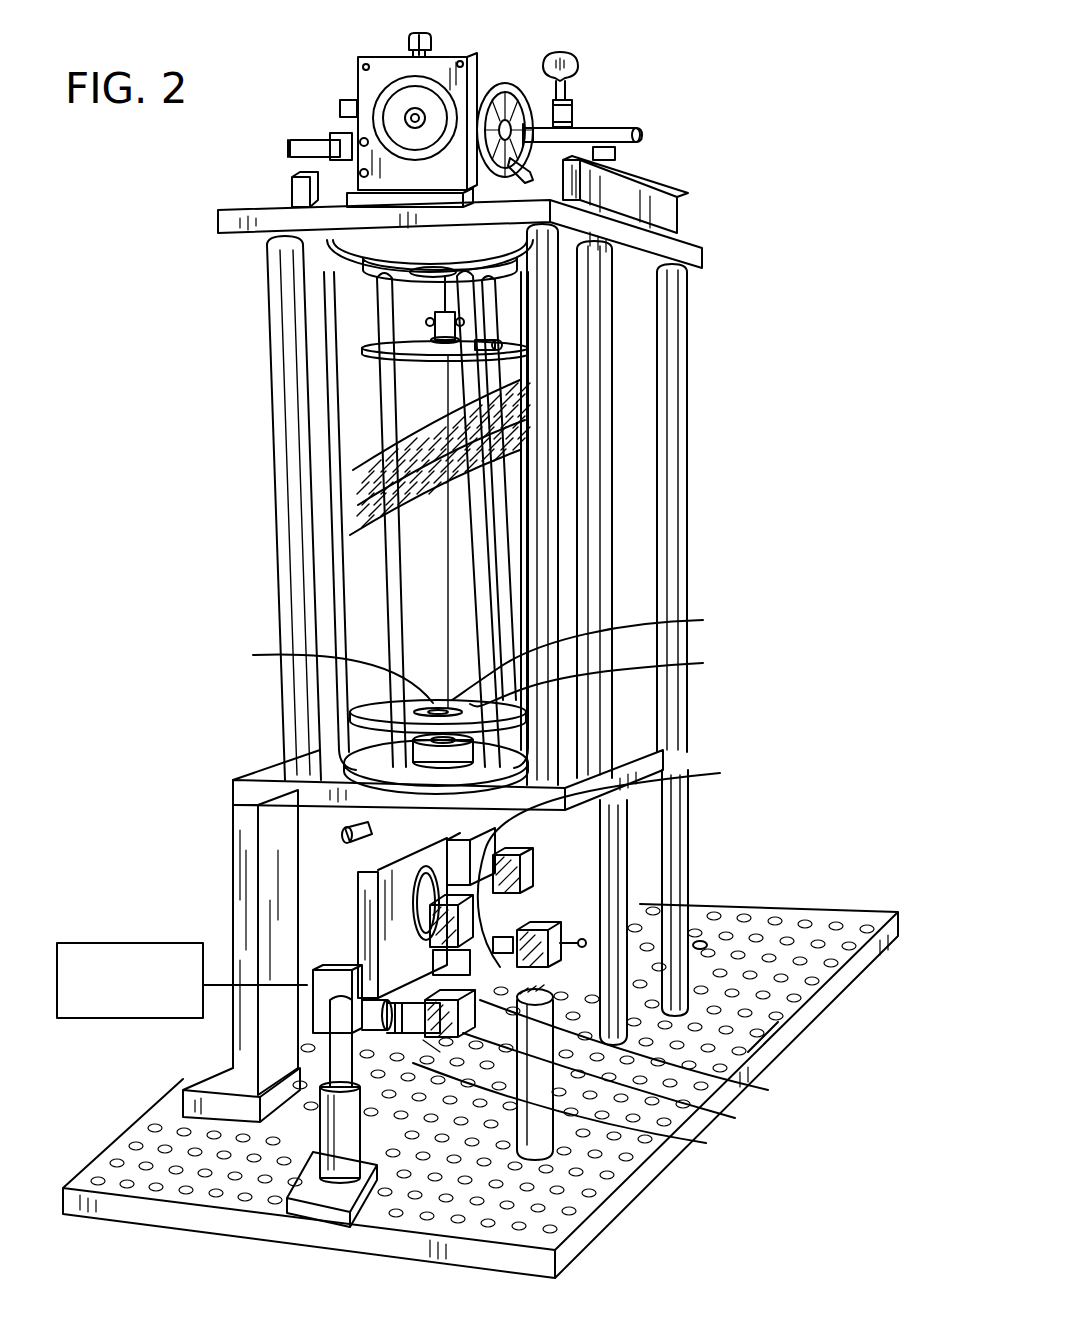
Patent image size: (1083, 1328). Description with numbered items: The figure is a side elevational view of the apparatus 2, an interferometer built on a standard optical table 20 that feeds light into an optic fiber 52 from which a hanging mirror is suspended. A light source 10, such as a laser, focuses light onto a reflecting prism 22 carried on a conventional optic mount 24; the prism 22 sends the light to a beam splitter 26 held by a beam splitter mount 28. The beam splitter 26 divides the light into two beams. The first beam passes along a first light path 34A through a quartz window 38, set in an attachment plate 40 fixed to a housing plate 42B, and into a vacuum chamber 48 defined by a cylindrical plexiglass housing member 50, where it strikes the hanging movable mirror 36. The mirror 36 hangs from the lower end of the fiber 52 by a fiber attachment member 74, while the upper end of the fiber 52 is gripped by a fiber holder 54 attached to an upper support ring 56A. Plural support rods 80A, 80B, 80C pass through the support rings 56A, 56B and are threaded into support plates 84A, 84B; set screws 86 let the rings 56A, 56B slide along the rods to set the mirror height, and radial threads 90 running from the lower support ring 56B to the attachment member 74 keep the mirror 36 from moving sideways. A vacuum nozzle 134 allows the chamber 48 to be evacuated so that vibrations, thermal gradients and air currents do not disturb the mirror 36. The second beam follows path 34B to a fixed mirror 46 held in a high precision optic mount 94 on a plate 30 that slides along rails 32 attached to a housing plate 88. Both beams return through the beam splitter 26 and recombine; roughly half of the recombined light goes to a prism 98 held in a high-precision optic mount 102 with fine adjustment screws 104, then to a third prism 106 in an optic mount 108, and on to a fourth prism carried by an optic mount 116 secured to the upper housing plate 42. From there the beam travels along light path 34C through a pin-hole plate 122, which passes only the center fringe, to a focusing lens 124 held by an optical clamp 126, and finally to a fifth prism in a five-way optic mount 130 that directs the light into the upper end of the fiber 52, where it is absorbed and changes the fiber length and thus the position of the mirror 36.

The apparatus 2 is at (738, 170).
The light source 10 is at (92, 1018).
The optical table 20 is at (377, 1237).
The reflecting prism 22 is at (313, 1007).
The optic mount 24 is at (313, 1125).
The beam splitter 26 is at (440, 918).
The beam splitter mount 28 is at (540, 913).
The plate 30 is at (612, 745).
The rails 32 is at (440, 973).
The first light path 34A is at (447, 855).
The path 34B is at (518, 880).
The light path 34C is at (762, 1033).
The hanging movable mirror 36 is at (326, 675).
The quartz window 38 is at (433, 740).
The attachment plate 40 is at (273, 767).
The housing plate 42 is at (693, 255).
The housing plate 42B is at (253, 792).
The fixed mirror 46 is at (493, 840).
The vacuum chamber 48 is at (355, 594).
The cylindrical plexiglass housing member 50 is at (367, 543).
The optic fiber 52 is at (430, 503).
The fiber holder 54 is at (430, 307).
The support ring 56A is at (387, 375).
The support ring 56B is at (352, 718).
The fiber attachment member 74 is at (594, 654).
The support rod 80A is at (480, 397).
The support rod 80B is at (517, 427).
The support rod 80C is at (490, 452).
The support plate 84A is at (490, 270).
The support plate 84B is at (515, 747).
The set screws 86 is at (498, 346).
The housing plate 88 is at (245, 1072).
The radial threads 90 is at (603, 680).
The high precision optic mount 94 is at (615, 864).
The prism 98 is at (641, 1052).
The high-precision optic mount 102 is at (623, 1082).
The fine adjustment screws 104 is at (583, 1110).
The third prism 106 is at (706, 942).
The high precision optic mount 108 is at (588, 942).
The high-precision optic mount 116 is at (617, 152).
The pin-hole plate 122 is at (600, 116).
The focusing lens 124 is at (579, 92).
The optical clamp 126 is at (488, 83).
The high-precision optic mount 130 is at (383, 95).
The vacuum nozzle 134 is at (347, 837).